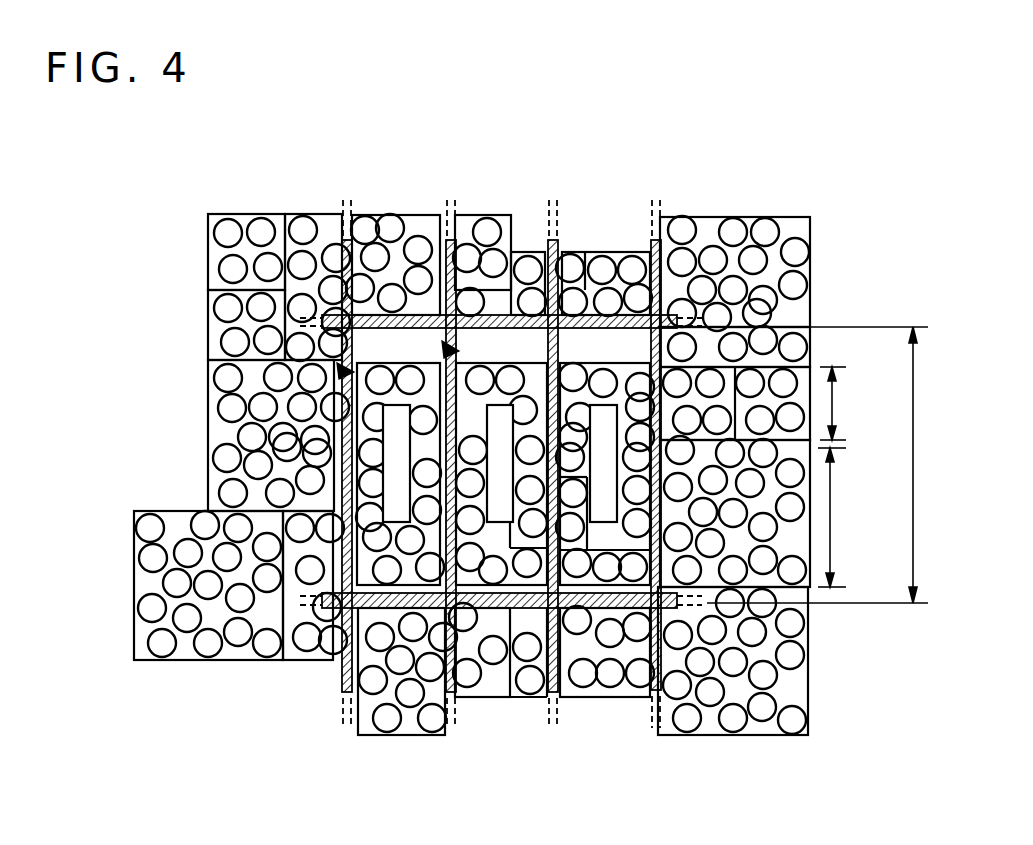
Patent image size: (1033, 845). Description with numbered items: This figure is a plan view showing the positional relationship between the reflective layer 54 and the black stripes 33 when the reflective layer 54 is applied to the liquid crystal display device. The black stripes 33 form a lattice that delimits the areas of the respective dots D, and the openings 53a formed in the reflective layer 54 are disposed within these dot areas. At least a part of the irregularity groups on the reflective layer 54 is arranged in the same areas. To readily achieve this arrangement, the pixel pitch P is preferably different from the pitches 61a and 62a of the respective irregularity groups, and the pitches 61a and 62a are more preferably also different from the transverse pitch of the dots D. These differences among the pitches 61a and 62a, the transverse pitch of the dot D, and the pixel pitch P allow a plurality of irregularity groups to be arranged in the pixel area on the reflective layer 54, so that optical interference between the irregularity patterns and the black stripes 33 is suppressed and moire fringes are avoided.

The reflective layer 54 is at (829, 288).
The black stripes 33 is at (343, 672).
The openings 53a is at (497, 522).
The dots D is at (456, 350).
The pitch of the first irregularity group 61a is at (852, 403).
The pitch of the second irregularity group 62a is at (851, 517).
The pixel pitch P is at (821, 465).